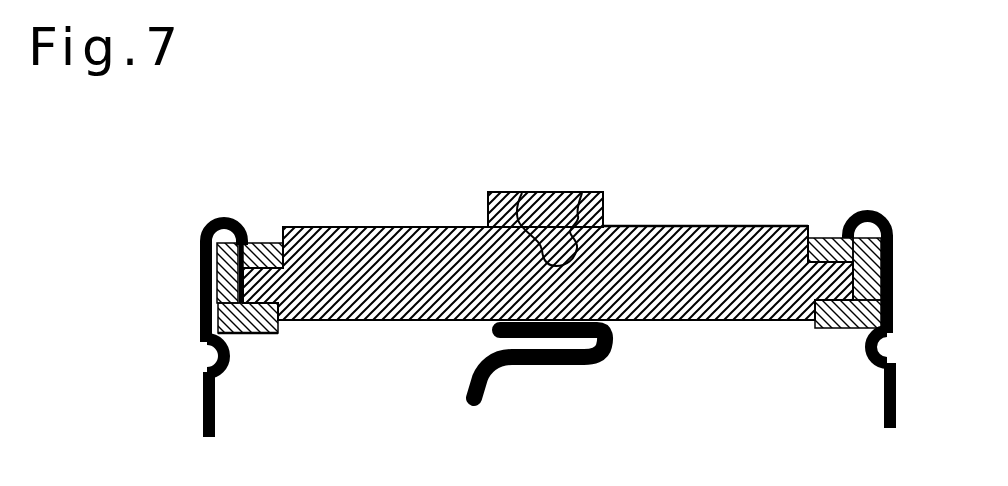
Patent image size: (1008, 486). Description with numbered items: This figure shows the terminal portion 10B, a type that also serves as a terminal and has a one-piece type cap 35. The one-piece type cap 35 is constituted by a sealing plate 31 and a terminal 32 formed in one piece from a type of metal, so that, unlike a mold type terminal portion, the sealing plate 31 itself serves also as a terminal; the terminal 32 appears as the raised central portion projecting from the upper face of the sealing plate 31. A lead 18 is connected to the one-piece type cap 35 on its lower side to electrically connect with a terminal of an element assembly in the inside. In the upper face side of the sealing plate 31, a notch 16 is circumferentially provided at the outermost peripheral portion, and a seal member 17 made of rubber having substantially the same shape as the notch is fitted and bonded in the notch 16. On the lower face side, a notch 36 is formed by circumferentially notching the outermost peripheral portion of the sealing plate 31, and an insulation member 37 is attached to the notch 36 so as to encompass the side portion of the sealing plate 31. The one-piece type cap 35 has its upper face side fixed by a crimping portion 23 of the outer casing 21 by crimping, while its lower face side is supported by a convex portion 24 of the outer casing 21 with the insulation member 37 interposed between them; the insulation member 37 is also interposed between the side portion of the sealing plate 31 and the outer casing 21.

The terminal portion 10B is at (792, 187).
The notch 16 is at (218, 278).
The seal member 17 is at (268, 243).
The lead 18 is at (532, 367).
The outer casing 21 is at (203, 402).
The crimping portion 23 is at (230, 217).
The convex portion 24 is at (218, 348).
The sealing plate 31 is at (391, 227).
The terminal 32 is at (503, 192).
The one-piece type cap 35 is at (708, 227).
The notch 36 is at (203, 313).
The insulation member 37 is at (257, 334).